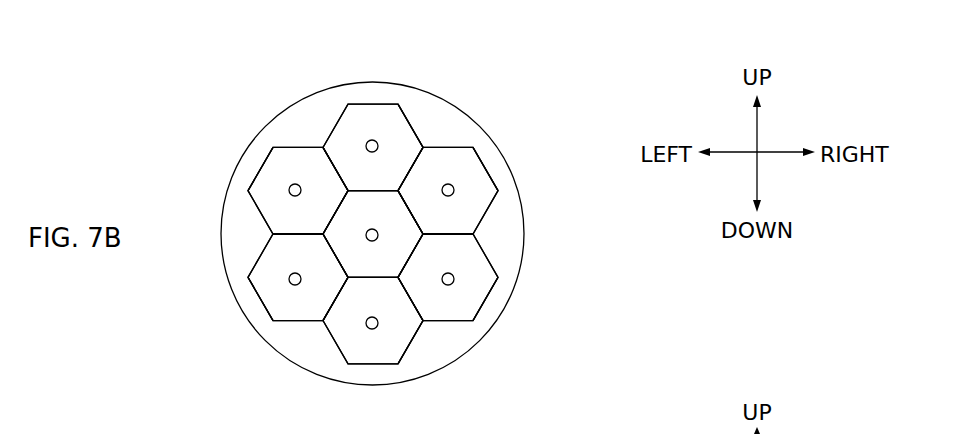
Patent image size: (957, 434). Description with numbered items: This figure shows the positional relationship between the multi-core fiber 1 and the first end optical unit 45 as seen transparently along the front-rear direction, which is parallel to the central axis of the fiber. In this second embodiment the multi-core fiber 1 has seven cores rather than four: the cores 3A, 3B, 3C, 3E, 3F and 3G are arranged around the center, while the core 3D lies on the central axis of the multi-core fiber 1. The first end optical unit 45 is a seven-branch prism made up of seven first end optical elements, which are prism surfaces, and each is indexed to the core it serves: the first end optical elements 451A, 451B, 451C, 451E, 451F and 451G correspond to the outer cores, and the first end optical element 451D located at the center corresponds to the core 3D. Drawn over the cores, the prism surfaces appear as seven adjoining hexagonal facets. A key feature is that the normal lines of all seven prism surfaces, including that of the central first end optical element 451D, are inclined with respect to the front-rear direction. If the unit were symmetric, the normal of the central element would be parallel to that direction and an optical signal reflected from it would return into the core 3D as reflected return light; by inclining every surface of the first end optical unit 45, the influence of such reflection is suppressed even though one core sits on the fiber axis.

The multi-core fiber 1 is at (277, 87).
The first end optical unit 45 is at (504, 232).
The core 3A is at (369, 140).
The core 3B is at (289, 188).
The core 3C is at (454, 188).
The core 3D is at (379, 234).
The core 3E is at (289, 285).
The core 3F is at (454, 285).
The core 3G is at (369, 330).
The first end optical element 451A is at (409, 123).
The first end optical element 451B is at (258, 168).
The first end optical element 451C is at (488, 168).
The first end optical element 451D is at (415, 208).
The first end optical element 451E is at (258, 302).
The first end optical element 451F is at (488, 302).
The first end optical element 451G is at (409, 346).